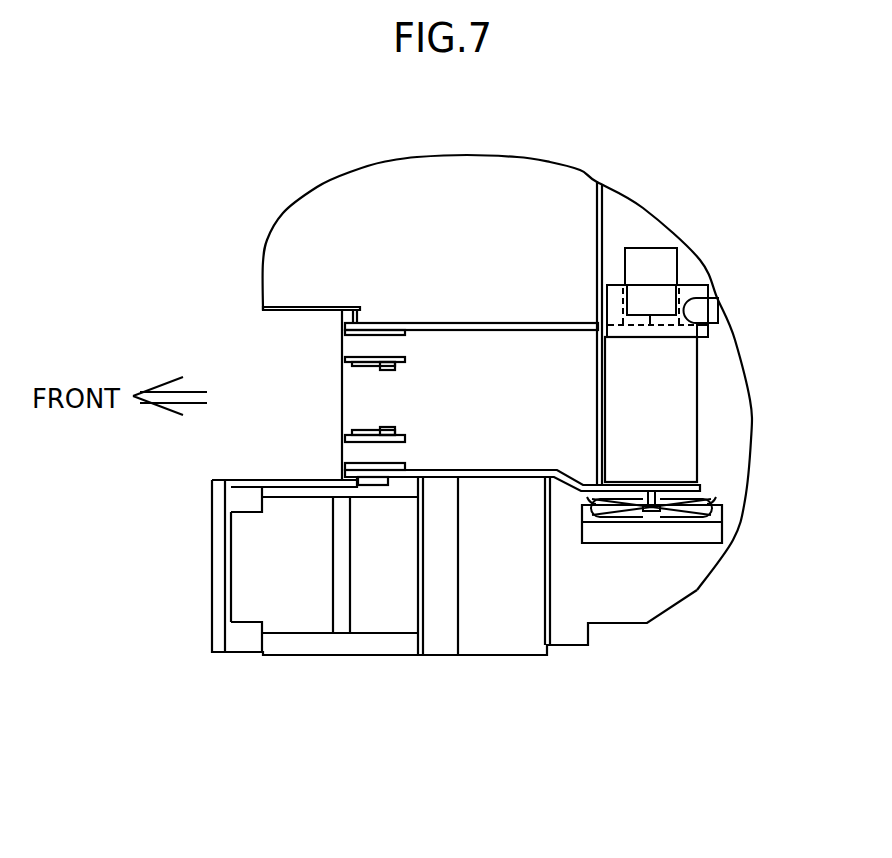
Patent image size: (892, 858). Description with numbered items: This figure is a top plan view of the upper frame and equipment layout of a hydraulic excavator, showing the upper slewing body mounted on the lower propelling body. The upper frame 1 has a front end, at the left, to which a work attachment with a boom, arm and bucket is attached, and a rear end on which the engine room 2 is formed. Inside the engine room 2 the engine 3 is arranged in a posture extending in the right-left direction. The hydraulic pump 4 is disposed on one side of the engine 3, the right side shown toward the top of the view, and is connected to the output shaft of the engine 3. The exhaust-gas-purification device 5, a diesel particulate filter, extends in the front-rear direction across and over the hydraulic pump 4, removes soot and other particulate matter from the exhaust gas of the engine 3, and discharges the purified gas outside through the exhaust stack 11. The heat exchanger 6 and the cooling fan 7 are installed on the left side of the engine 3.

The upper frame 1 is at (637, 632).
The engine room 2 is at (726, 398).
The engine 3 is at (697, 446).
The hydraulic pump 4 is at (678, 270).
The exhaust-gas-purification device 5 is at (643, 290).
The heat exchanger 6 is at (705, 542).
The cooling fan 7 is at (625, 512).
The exhaust stack 11 is at (710, 303).